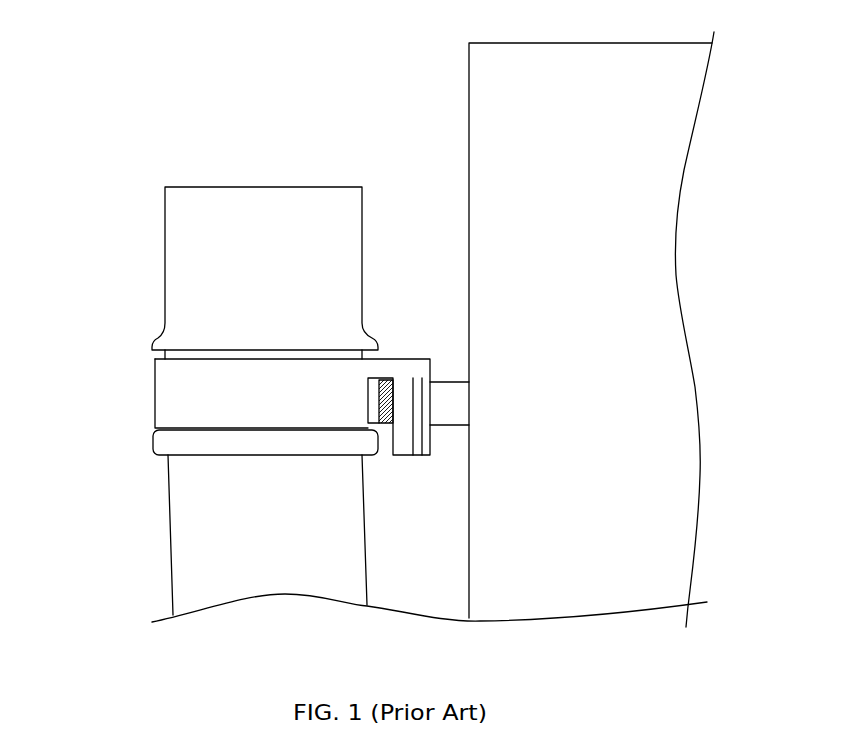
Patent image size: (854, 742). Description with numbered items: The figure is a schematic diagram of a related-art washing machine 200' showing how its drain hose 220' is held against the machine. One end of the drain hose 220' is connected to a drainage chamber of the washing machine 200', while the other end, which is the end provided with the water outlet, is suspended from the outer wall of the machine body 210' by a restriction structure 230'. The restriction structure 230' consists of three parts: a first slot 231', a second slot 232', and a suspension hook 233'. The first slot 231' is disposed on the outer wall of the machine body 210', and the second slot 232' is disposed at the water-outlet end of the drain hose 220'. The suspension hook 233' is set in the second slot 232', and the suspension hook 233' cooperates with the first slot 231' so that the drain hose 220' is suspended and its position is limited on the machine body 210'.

The washing machine 200' is at (400, 321).
The machine body 210' is at (462, 329).
The drain hose 220' is at (234, 401).
The restriction structure 230' is at (249, 392).
The first slot 231' is at (278, 418).
The second slot 232' is at (259, 392).
The suspension hook 233' is at (255, 411).